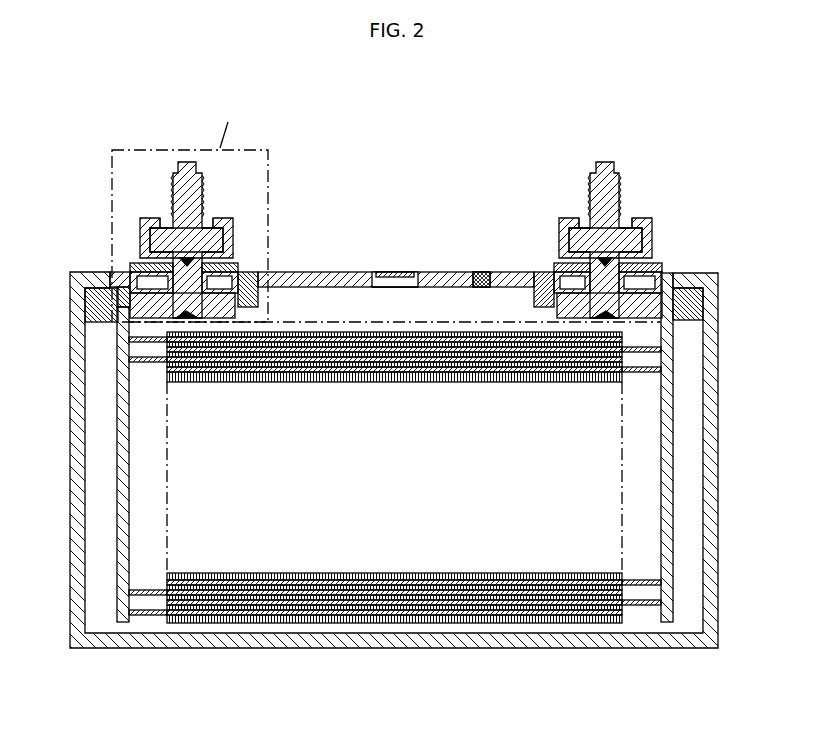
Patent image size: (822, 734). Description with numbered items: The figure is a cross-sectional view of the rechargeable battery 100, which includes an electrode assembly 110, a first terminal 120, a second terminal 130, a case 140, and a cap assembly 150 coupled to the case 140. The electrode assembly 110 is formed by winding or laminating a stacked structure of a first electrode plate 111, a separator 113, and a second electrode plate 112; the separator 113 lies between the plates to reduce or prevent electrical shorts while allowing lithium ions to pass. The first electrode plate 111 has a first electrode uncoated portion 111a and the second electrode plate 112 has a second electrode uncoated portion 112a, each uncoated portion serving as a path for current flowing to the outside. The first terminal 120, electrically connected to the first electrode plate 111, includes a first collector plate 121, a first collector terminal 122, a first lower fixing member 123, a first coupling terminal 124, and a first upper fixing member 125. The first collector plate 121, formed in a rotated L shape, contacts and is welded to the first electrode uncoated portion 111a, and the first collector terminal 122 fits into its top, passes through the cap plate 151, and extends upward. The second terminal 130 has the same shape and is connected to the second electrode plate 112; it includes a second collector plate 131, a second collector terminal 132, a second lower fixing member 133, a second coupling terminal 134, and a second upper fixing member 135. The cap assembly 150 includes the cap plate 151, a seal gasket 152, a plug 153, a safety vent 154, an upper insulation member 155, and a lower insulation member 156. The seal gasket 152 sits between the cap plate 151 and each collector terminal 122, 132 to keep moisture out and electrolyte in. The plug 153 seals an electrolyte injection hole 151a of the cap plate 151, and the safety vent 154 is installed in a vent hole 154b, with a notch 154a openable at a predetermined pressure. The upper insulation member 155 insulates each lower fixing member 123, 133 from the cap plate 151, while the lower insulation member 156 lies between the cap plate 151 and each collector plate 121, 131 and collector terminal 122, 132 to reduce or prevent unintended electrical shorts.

The rechargeable battery 100 is at (747, 129).
The electrode assembly 110 is at (396, 512).
The first electrode plate 111 is at (372, 520).
The first electrode uncoated portion 111a is at (148, 617).
The second electrode plate 112 is at (418, 525).
The second electrode uncoated portion 112a is at (640, 607).
The separator 113 is at (396, 623).
The first terminal 120 is at (136, 345).
The first collector plate 121 is at (106, 440).
The first collector terminal 122 is at (161, 279).
The first lower fixing member 123 is at (128, 232).
The first coupling terminal 124 is at (164, 181).
The first upper fixing member 125 is at (213, 209).
The second terminal 130 is at (663, 357).
The second collector plate 131 is at (686, 441).
The second collector terminal 132 is at (633, 277).
The second lower fixing member 133 is at (666, 227).
The second coupling terminal 134 is at (634, 181).
The second upper fixing member 135 is at (585, 211).
The case 140 is at (718, 375).
The cap assembly 150 is at (386, 233).
The cap plate 151 is at (322, 276).
The electrolyte injection hole 151a is at (478, 288).
The seal gasket 152 is at (258, 270).
The plug 153 is at (483, 271).
The safety vent 154 is at (397, 276).
The notch 154a is at (385, 271).
The vent hole 154b is at (397, 288).
The upper insulation member 155 is at (240, 263).
The lower insulation member 156 is at (258, 297).